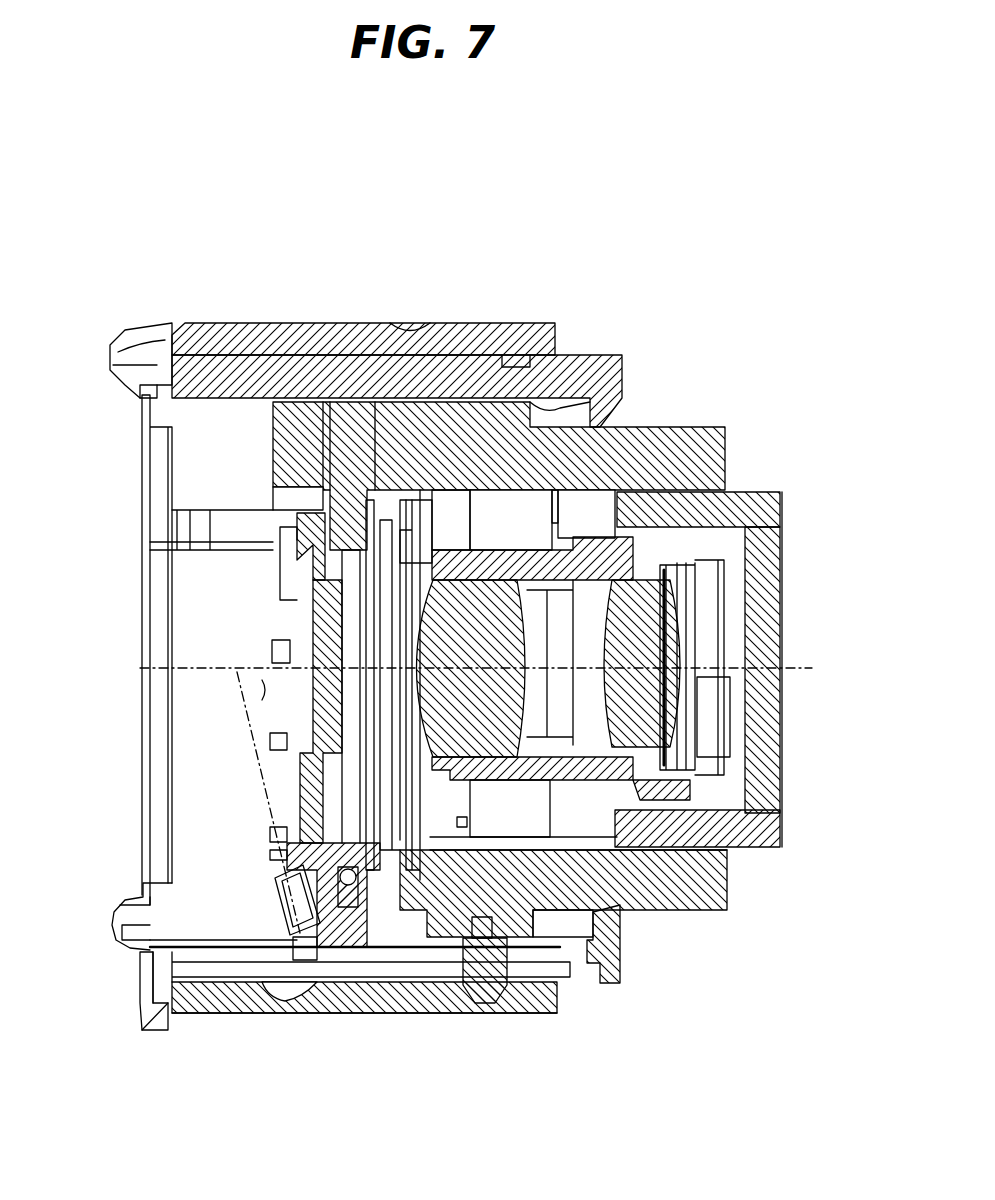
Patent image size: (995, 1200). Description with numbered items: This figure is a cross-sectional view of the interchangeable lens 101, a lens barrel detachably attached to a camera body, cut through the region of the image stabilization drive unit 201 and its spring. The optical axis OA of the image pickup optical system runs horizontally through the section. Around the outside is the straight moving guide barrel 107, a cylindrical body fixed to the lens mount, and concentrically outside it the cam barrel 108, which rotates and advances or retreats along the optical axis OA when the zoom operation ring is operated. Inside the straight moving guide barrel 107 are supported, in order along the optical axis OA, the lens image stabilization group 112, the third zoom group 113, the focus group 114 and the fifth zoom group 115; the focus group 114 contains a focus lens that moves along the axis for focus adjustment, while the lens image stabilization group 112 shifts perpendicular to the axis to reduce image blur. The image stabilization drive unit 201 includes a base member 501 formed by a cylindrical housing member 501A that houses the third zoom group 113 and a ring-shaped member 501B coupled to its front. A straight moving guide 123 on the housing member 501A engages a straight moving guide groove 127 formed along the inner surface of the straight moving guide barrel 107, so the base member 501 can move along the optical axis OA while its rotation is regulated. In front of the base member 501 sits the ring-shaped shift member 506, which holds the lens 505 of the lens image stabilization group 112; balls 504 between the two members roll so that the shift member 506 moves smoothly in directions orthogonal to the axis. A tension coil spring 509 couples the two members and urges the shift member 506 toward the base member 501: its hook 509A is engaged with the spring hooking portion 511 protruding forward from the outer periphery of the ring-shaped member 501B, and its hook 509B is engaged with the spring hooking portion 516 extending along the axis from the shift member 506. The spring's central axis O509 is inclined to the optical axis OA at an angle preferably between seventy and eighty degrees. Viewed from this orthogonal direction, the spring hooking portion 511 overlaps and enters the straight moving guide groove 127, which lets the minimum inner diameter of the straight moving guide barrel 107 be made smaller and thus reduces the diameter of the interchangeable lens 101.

The interchangeable lens 101 is at (700, 232).
The straight moving guide barrel 107 is at (572, 377).
The cam barrel 108 is at (497, 323).
The lens image stabilization group 112 is at (141, 360).
The third zoom group 113 is at (647, 597).
The focus group 114 is at (680, 588).
The fifth zoom group 115 is at (758, 535).
The straight moving guide 123 is at (443, 947).
The straight moving guide groove 127 is at (528, 947).
The image stabilization drive unit 201 is at (251, 928).
The base member 501 is at (487, 1130).
The housing member 501A is at (415, 932).
The ring-shaped member 501B is at (347, 940).
The ball 504 is at (354, 888).
The lens 505 is at (305, 620).
The shift member 506 is at (295, 528).
The spring 509 is at (305, 940).
The hook 509A is at (300, 930).
The hook 509B is at (288, 868).
The spring hooking portion 511 is at (300, 978).
The spring hooking portion 516 is at (282, 854).
The optical axis OA is at (149, 672).
The central axis of the spring O509 is at (264, 779).